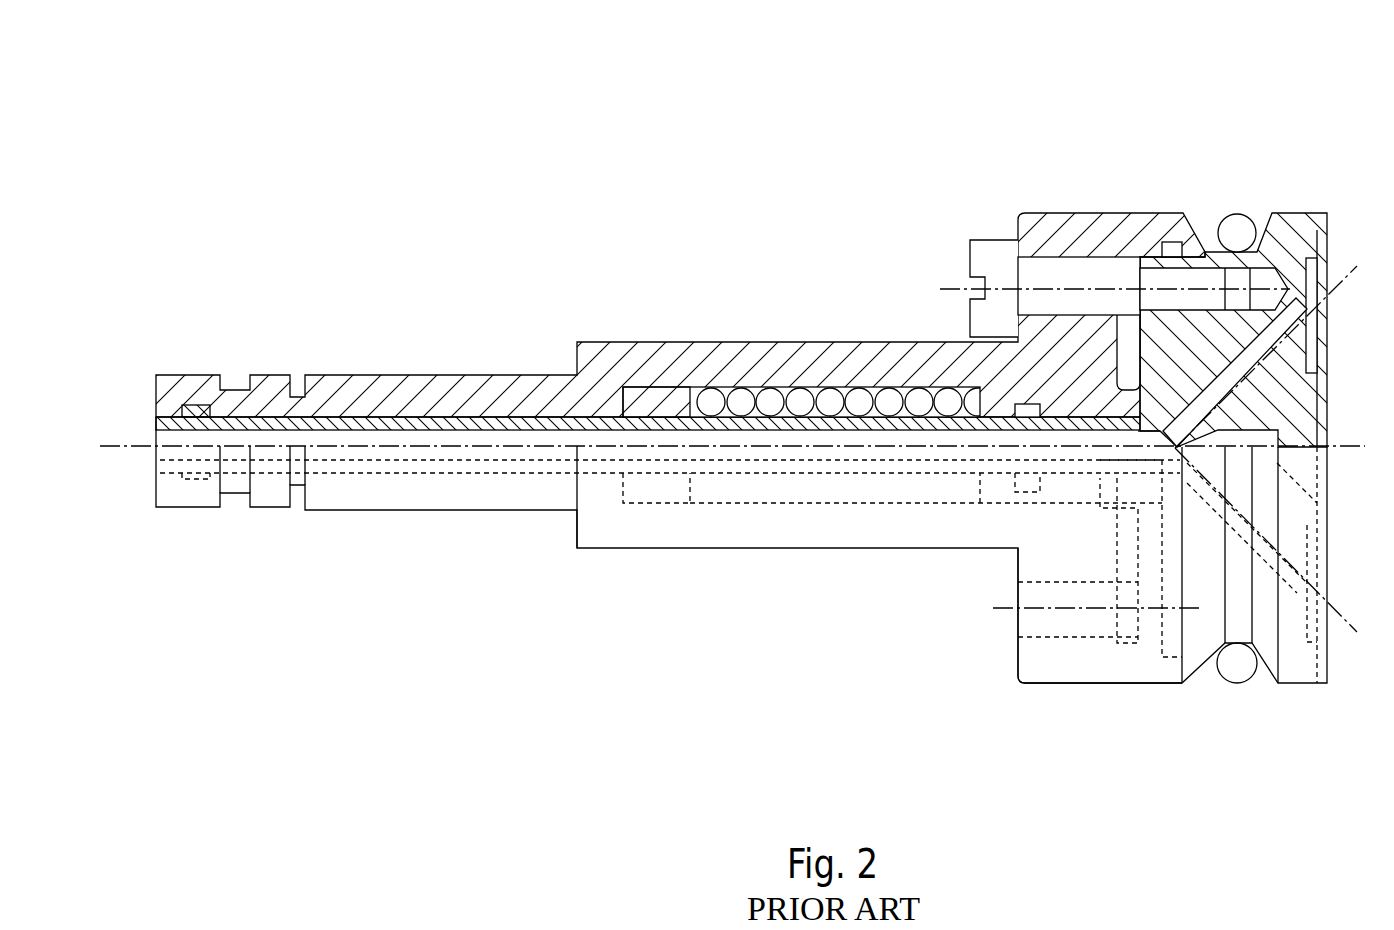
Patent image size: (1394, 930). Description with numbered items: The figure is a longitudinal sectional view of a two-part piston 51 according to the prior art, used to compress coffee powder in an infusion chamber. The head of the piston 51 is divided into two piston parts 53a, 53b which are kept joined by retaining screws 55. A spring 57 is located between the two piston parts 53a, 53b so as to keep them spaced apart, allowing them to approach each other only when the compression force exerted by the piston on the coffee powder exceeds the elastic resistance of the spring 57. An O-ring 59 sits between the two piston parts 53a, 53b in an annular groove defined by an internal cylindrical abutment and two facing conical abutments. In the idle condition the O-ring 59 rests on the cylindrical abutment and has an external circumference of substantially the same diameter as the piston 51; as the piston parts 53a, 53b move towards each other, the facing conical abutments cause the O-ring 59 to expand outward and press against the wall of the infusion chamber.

The two-part piston 51 is at (703, 663).
The piston part 53a is at (1292, 213).
The piston part 53b is at (1053, 683).
The retaining screw 55 is at (995, 240).
The spring 57 is at (745, 400).
The O-ring 59 is at (1238, 213).